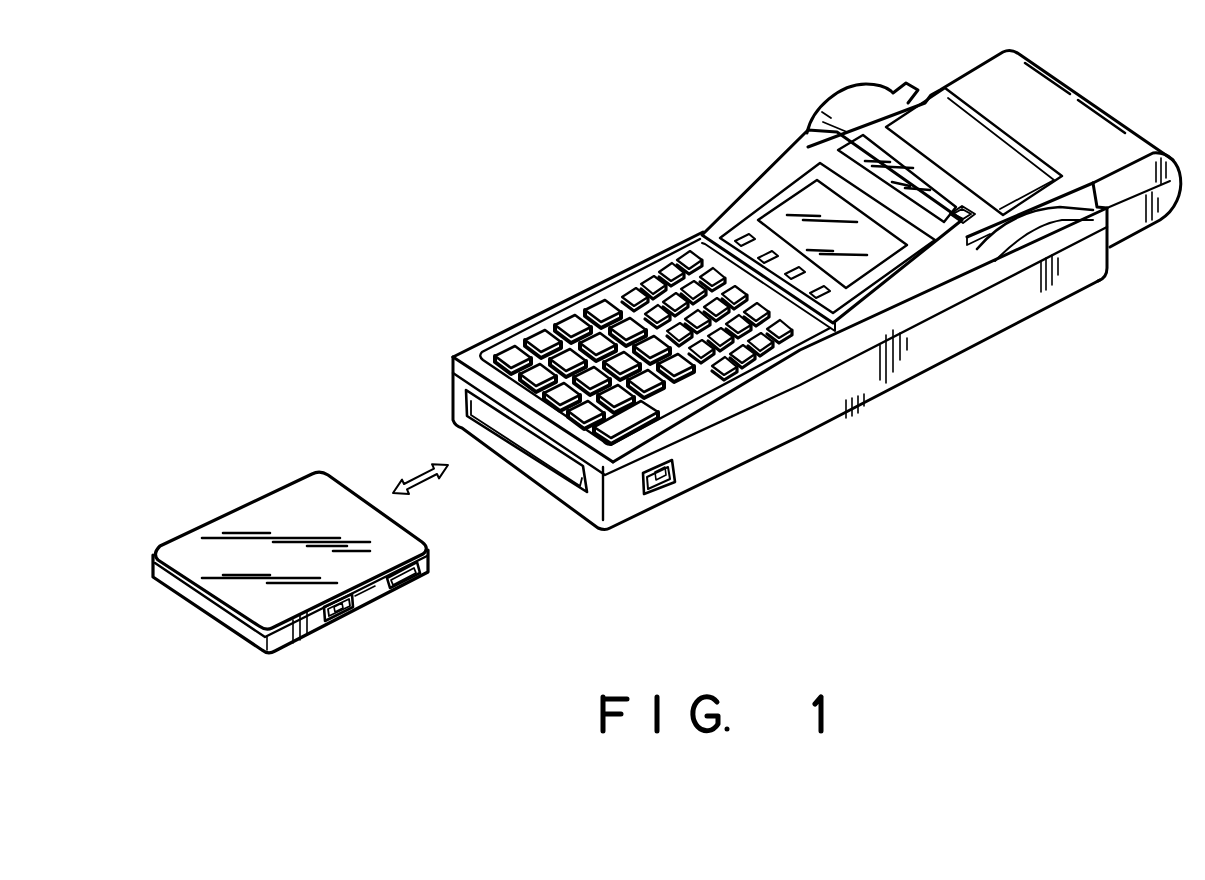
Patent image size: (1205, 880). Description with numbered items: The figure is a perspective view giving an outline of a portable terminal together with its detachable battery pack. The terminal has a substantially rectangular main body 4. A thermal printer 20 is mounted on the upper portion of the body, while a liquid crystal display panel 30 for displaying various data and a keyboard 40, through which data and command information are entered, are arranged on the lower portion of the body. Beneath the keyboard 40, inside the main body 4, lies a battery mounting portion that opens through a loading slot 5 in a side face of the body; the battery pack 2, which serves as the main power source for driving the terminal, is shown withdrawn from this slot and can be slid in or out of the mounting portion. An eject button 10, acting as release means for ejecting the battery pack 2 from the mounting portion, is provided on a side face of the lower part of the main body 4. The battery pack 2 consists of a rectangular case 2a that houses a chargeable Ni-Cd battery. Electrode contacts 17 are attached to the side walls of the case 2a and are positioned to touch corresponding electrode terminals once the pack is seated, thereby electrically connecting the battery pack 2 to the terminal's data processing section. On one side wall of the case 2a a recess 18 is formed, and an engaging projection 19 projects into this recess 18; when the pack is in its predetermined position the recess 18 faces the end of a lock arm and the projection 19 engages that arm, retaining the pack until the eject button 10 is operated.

The battery pack 2 is at (218, 517).
The case 2a is at (288, 500).
The main body 4 is at (507, 326).
The loading slot 5 is at (585, 478).
The eject button 10 is at (665, 488).
The electrode contacts 17 is at (413, 583).
The recess 18 is at (332, 621).
The engaging projection 19 is at (358, 594).
The thermal printer 20 is at (932, 91).
The liquid crystal display panel 30 is at (803, 195).
The keyboard 40 is at (607, 307).